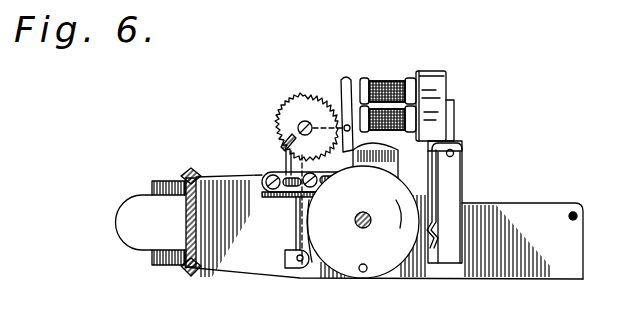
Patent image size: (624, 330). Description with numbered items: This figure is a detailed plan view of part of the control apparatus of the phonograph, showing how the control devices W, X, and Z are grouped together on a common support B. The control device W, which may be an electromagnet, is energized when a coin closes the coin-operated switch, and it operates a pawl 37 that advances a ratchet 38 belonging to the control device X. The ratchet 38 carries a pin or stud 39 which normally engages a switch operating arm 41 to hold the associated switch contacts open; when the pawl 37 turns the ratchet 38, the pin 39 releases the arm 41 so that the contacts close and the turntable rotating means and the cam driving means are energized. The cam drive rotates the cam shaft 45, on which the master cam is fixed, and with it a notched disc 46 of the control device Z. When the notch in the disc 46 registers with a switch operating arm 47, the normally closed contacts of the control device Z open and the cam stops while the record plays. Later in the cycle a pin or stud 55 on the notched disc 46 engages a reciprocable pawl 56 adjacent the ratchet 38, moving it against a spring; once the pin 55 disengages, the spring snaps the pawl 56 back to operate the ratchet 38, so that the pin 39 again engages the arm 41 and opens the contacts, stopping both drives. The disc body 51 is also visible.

The pawl 37 is at (347, 80).
The ratchet 38 is at (295, 95).
The pin or stud 39 is at (278, 141).
The control device W is at (391, 78).
The control device X is at (266, 158).
The switch operating arm 41 is at (287, 197).
The cam disc 51 is at (363, 222).
The cam shaft 45 is at (369, 226).
The reciprocable pawl 56 is at (327, 231).
The pin or stud 55 is at (364, 273).
The notched disc 46 is at (322, 278).
The switch operating arm 47 is at (436, 196).
The control device Z is at (425, 258).
The base plate B is at (516, 279).